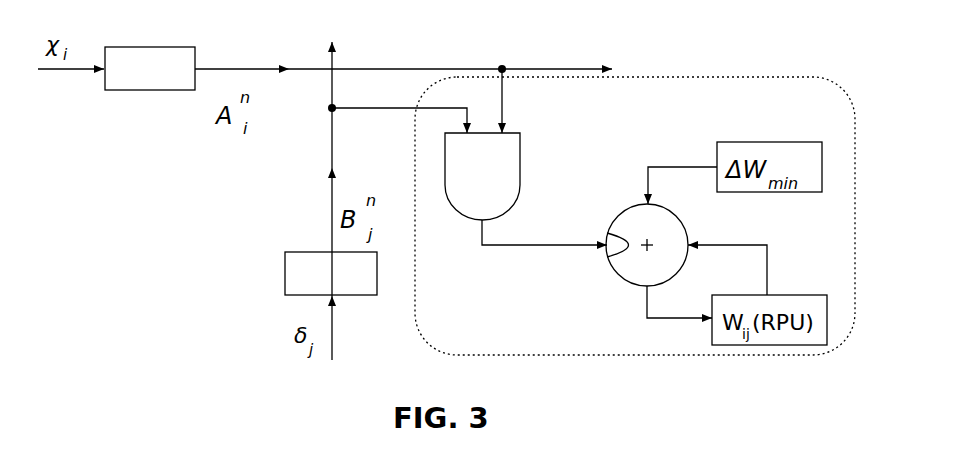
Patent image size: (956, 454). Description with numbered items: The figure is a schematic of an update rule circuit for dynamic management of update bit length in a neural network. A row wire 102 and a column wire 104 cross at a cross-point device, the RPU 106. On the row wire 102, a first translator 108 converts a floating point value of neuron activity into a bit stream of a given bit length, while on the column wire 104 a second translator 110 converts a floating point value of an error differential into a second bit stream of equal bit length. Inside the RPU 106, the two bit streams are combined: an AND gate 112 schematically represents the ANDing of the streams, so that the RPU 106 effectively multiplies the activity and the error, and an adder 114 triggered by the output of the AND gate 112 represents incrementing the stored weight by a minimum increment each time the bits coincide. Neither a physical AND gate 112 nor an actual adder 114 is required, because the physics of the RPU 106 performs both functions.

The row wire 102 is at (390, 66).
The column wire 104 is at (328, 195).
The cross-point device (RPU) 106 is at (550, 326).
The first translator 108 is at (148, 47).
The second translator 110 is at (285, 273).
The AND gate 112 is at (522, 167).
The adder 114 is at (685, 224).